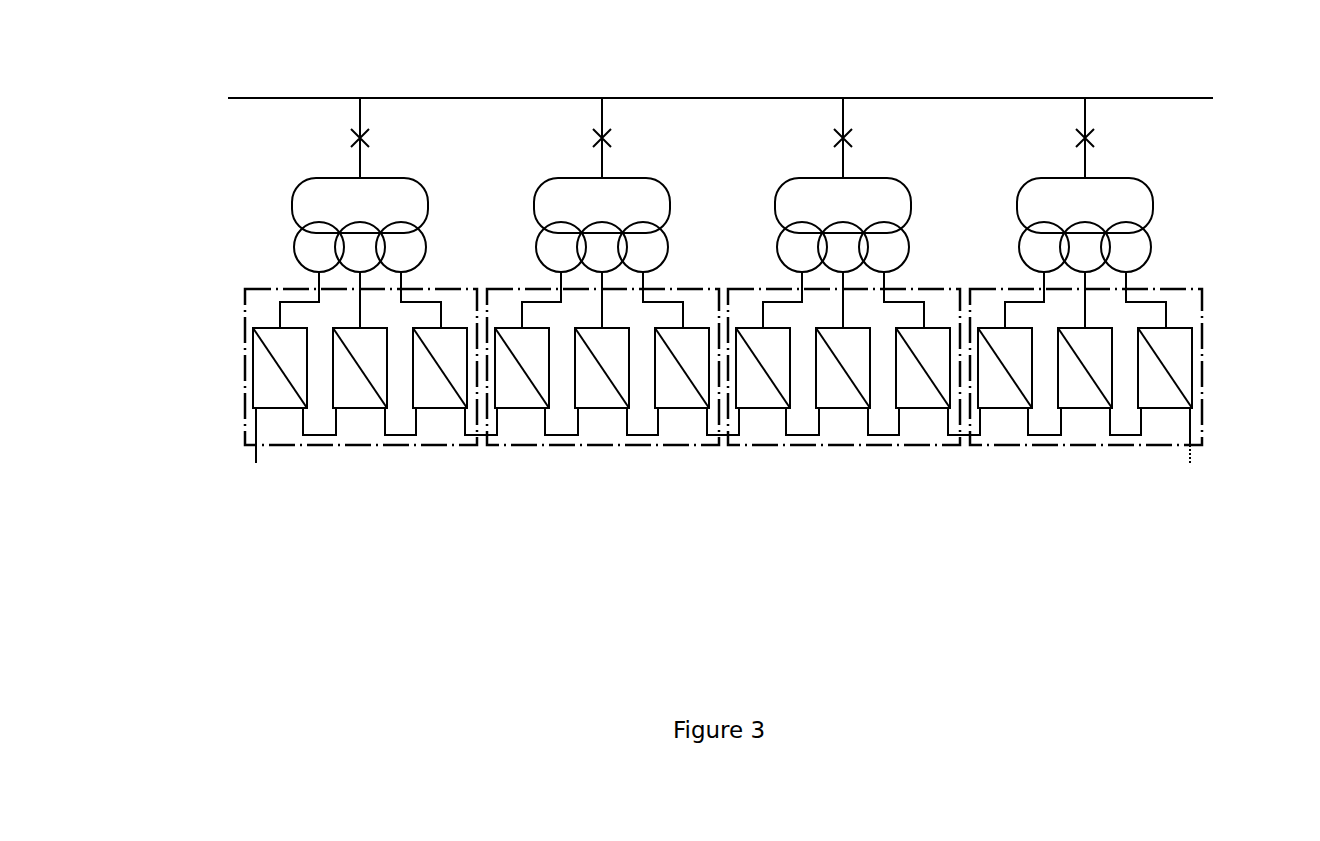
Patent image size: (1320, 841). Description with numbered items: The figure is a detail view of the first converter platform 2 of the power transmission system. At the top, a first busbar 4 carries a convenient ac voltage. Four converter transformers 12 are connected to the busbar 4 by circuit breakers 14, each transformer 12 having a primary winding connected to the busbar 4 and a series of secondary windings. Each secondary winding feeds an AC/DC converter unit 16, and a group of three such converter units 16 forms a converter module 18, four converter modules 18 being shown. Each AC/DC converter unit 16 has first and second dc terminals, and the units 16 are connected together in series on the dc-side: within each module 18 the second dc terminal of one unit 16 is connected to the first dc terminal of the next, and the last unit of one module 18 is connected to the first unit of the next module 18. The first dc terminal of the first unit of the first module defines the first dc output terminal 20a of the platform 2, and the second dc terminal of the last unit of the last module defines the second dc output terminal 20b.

The first converter platform 2 is at (844, 586).
The first busbar 4 is at (886, 98).
The converter transformer 12 is at (440, 228).
The circuit breaker 14 is at (347, 141).
The AC/DC converter unit 16 is at (278, 410).
The converter module 18 is at (452, 289).
The first dc output terminal 20a is at (242, 461).
The second dc output terminal 20b is at (1208, 457).